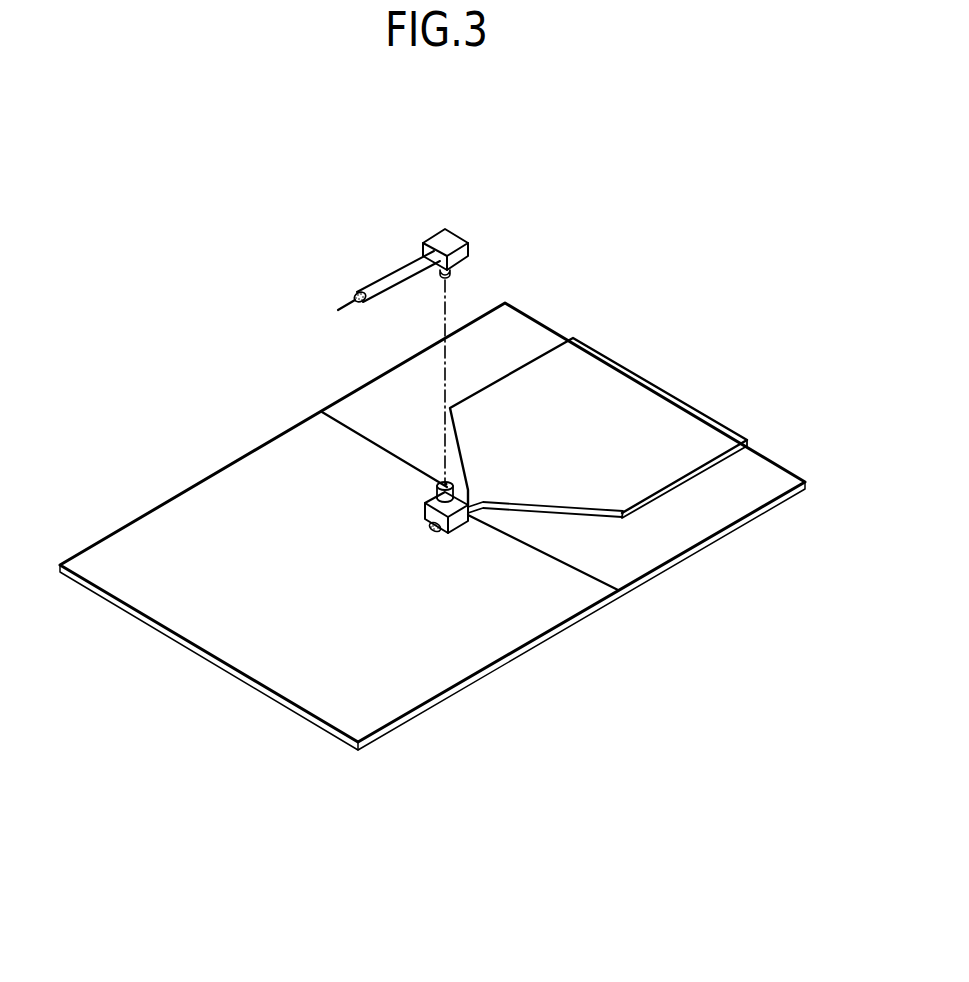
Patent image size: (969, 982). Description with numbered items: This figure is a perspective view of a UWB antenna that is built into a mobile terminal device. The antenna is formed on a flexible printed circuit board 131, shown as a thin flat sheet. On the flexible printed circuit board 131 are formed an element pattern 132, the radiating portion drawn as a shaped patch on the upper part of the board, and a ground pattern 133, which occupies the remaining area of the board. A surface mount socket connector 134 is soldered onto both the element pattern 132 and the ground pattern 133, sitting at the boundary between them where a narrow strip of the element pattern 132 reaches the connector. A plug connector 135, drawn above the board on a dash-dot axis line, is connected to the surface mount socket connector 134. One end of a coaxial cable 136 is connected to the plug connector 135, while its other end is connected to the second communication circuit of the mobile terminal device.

The flexible printed circuit board 131 is at (763, 468).
The element pattern 132 is at (622, 393).
The ground pattern 133 is at (387, 690).
The surface mount socket connector 134 is at (468, 530).
The plug connector 135 is at (445, 232).
The coaxial cable 136 is at (400, 273).